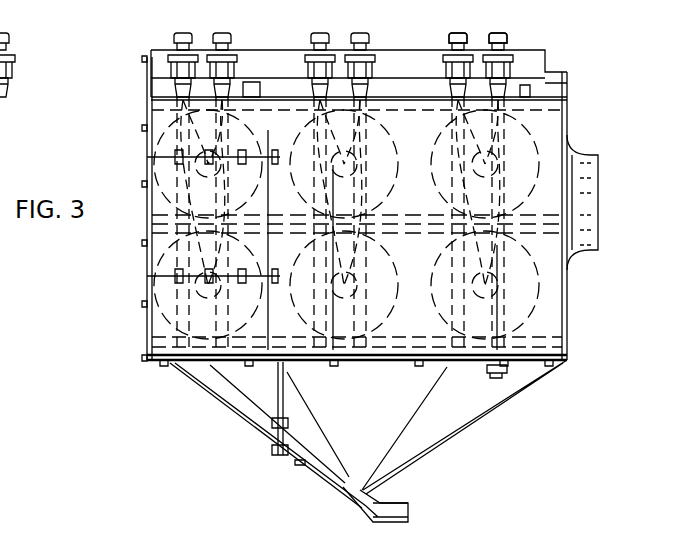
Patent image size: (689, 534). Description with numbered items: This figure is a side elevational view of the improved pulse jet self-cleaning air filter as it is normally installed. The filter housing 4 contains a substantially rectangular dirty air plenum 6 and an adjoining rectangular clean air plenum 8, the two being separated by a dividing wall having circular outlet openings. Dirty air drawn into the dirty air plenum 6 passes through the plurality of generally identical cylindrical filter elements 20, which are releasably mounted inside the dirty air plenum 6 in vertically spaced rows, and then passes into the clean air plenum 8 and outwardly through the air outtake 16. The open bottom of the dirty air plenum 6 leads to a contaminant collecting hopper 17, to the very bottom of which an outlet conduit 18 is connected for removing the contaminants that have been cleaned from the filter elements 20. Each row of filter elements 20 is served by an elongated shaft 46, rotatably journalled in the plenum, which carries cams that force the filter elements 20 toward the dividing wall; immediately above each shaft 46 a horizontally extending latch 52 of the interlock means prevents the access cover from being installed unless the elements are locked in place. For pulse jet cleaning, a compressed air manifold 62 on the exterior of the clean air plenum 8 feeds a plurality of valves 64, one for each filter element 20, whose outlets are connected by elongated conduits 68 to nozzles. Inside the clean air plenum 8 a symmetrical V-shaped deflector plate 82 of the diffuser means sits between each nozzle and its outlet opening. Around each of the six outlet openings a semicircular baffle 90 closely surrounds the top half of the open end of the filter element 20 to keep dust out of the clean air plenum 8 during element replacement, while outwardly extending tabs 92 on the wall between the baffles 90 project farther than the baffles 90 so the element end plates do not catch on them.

The filter housing 4 is at (573, 87).
The dirty air plenum 6 is at (282, 37).
The clean air plenum 8 is at (545, 128).
The air outtake 16 is at (592, 177).
The contaminant collecting hopper 17 is at (450, 420).
The outlet conduit 18 is at (397, 503).
The filter element 20 is at (530, 310).
The shaft 46 is at (147, 313).
The latch 52 is at (147, 158).
The compressed air manifold 62 is at (402, 58).
The valve 64 is at (465, 33).
The conduit 68 is at (458, 140).
The V-shaped deflector plate 82 is at (468, 313).
The semicircular baffle 90 is at (432, 258).
The tab 92 is at (543, 237).